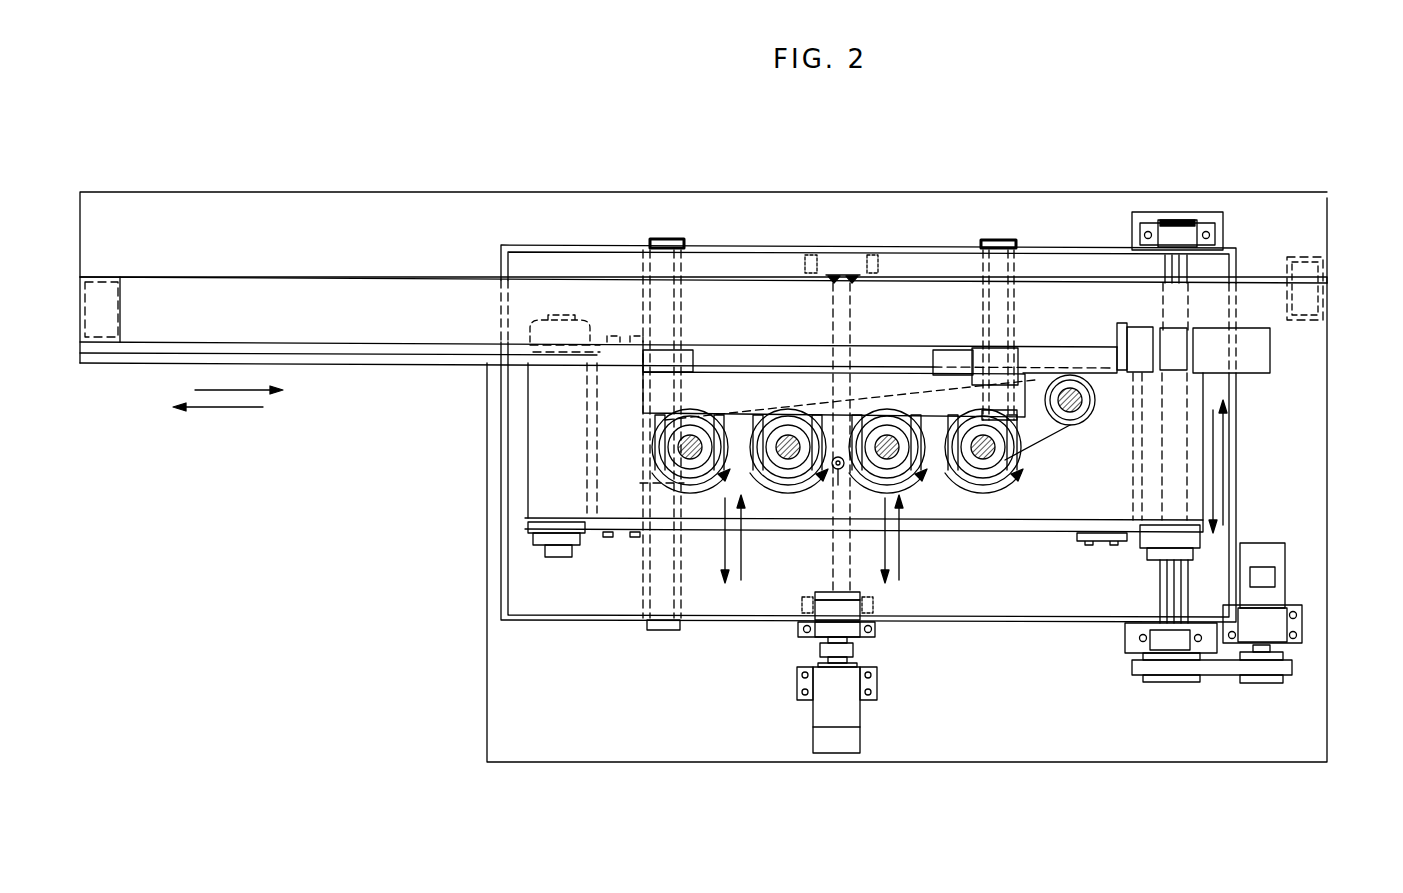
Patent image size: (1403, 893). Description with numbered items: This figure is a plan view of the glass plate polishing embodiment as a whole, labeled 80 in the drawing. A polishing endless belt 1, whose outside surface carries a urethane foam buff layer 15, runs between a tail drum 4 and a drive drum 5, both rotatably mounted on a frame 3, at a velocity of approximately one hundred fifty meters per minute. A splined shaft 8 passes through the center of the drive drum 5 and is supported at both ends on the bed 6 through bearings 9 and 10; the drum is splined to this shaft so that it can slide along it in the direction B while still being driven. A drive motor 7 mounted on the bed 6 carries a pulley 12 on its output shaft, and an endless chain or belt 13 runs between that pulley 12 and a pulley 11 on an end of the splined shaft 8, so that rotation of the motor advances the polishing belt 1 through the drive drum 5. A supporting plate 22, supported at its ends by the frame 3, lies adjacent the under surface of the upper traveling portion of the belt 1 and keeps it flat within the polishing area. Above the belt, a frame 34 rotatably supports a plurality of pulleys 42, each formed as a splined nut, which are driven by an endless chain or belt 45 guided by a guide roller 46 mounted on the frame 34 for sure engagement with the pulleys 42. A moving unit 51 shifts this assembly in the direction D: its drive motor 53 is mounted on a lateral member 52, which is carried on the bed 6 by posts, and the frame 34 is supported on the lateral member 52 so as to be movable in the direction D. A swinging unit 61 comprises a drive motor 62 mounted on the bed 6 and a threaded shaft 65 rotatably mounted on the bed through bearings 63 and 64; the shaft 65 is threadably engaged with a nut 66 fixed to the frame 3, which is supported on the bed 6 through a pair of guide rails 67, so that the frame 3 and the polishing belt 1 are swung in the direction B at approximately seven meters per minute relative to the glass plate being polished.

The wire processing apparatus 80 is at (1278, 165).
The lateral member 52 is at (297, 283).
The guide rails 67 is at (663, 238).
The bearing 64 is at (847, 247).
The bearing 10 is at (1185, 225).
The moving unit 51 is at (1262, 316).
The drive motor 53 is at (1267, 360).
The frame 34 is at (707, 385).
The pulleys 42 is at (783, 411).
The endless chain or belt 45 is at (1037, 387).
The buff layer 15 is at (543, 440).
The tail drum 4 is at (528, 530).
The polishing endless belt 1 is at (1067, 513).
The supporting plate 22 is at (710, 528).
The guide roller 46 is at (836, 470).
The nut 66 is at (858, 528).
The threaded shaft 65 is at (828, 570).
The drive drum 5 is at (1202, 530).
The splined shaft 8 is at (1158, 593).
The drive motor 7 is at (1275, 626).
The frame 3 is at (568, 616).
The bearing 63 is at (822, 628).
The bearing 9 is at (1125, 645).
The drive motor 62 is at (853, 705).
The swinging unit 61 is at (796, 738).
The pulley 11 is at (1160, 683).
The endless chain or belt 13 is at (1218, 675).
The pulley 12 is at (1262, 684).
The bed 6 is at (1256, 766).
The direction B is at (1230, 452).
The direction D is at (230, 393).